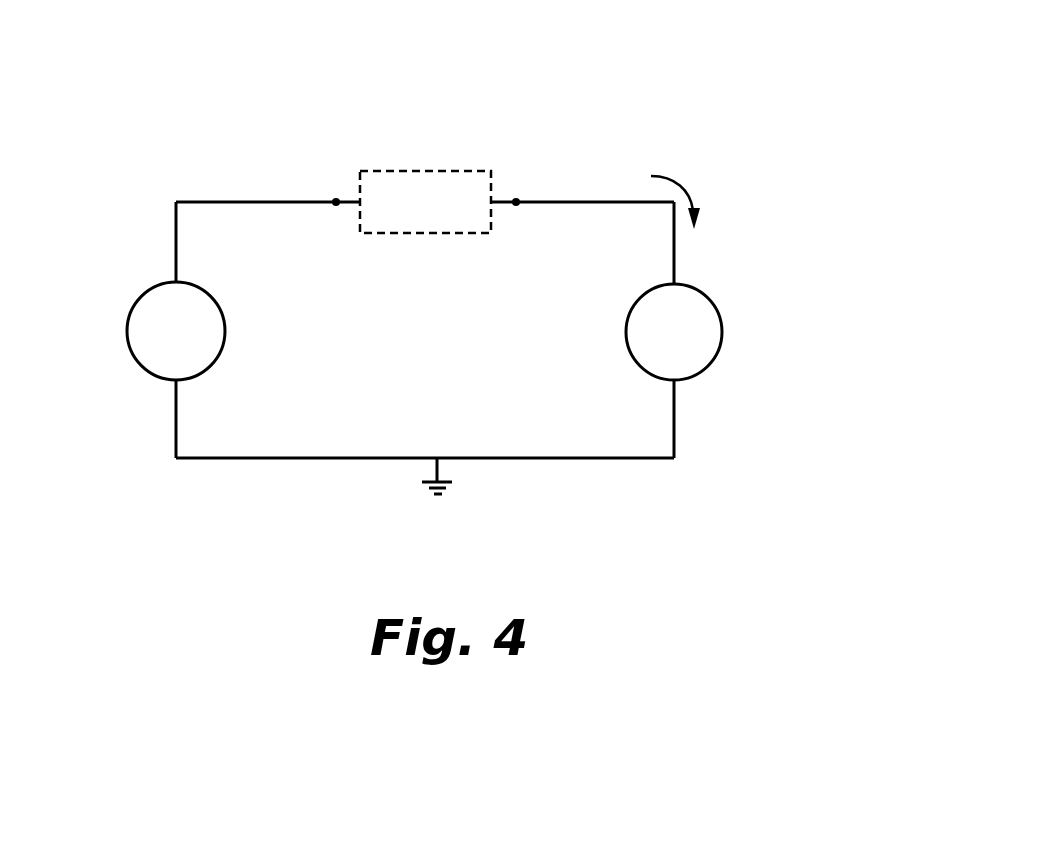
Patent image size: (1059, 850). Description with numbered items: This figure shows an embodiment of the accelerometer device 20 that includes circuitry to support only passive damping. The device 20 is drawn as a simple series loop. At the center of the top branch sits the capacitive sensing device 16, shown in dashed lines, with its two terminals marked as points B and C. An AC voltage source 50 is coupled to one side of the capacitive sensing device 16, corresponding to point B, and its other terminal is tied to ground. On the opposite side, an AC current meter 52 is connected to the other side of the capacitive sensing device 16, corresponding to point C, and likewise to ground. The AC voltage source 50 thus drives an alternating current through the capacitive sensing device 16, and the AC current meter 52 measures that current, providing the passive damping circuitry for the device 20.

The capacitive sensing device 16 is at (475, 171).
The device 20 is at (737, 97).
The AC voltage source 50 is at (138, 302).
The AC current meter 52 is at (707, 293).